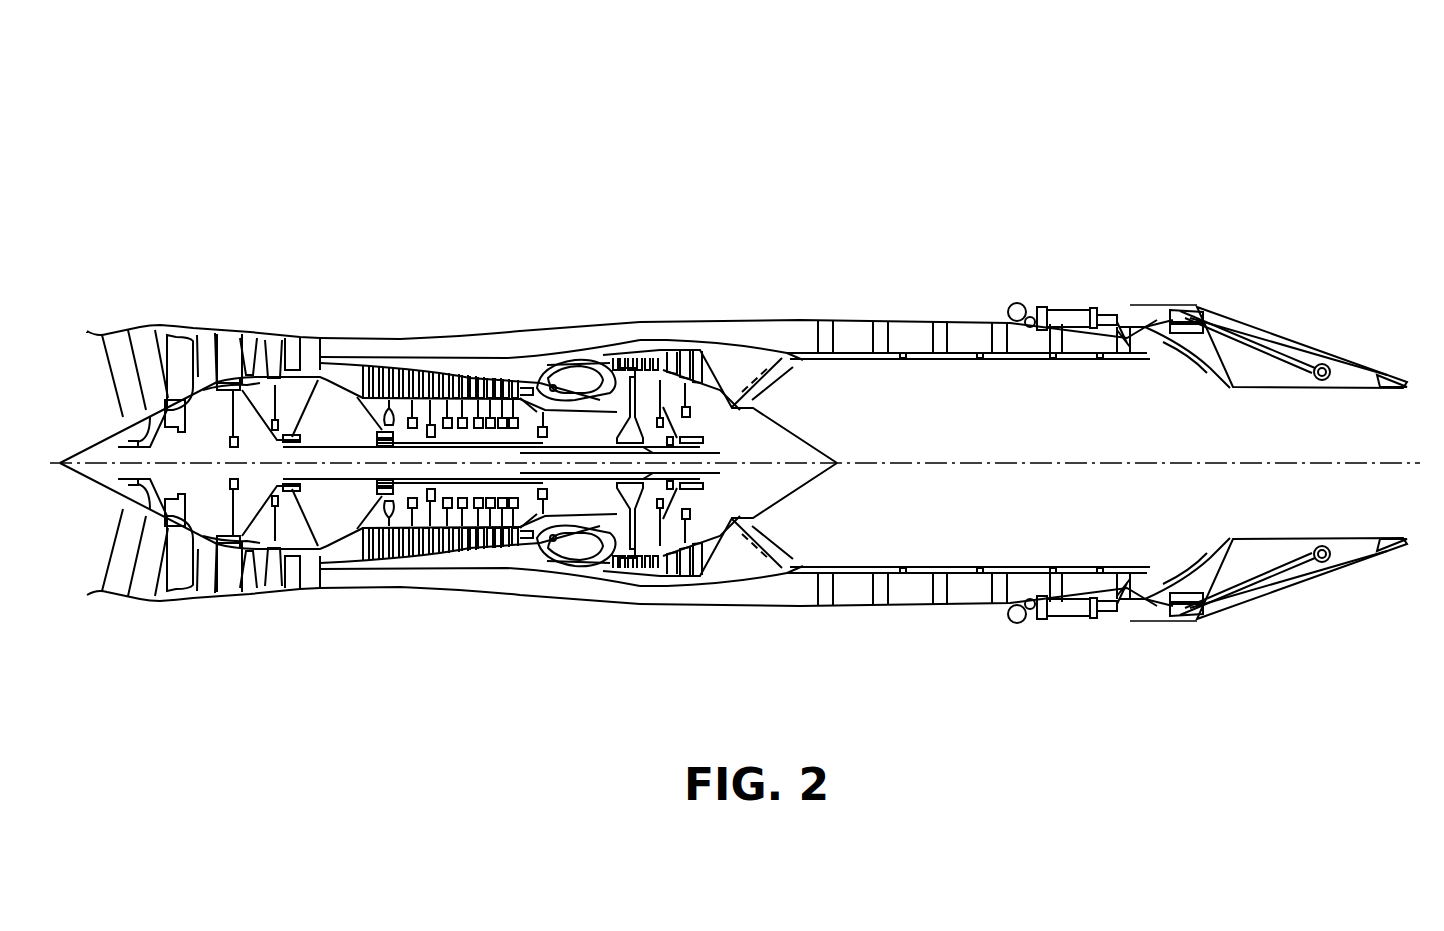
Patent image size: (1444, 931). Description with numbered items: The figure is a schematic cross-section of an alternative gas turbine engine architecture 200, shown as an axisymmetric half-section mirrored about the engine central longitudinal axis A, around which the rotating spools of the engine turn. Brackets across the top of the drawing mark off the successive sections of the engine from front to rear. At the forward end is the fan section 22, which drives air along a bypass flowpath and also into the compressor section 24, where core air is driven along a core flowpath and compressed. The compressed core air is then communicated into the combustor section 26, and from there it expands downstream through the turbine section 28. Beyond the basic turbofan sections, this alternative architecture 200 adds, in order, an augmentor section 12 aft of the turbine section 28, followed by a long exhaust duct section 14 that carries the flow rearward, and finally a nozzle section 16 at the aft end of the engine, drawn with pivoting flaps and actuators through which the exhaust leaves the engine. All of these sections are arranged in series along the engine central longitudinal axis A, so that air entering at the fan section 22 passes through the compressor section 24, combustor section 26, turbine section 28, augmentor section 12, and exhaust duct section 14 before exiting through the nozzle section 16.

The alternative engine architecture 200 is at (1008, 158).
The fan section 22 is at (316, 252).
The compressor section 24 is at (546, 252).
The combustor section 26 is at (623, 252).
The turbine section 28 is at (707, 252).
The augmentor section 12 is at (846, 252).
The exhaust duct section 14 is at (1137, 252).
The nozzle section 16 is at (1402, 252).
The engine central longitudinal axis A is at (1378, 463).